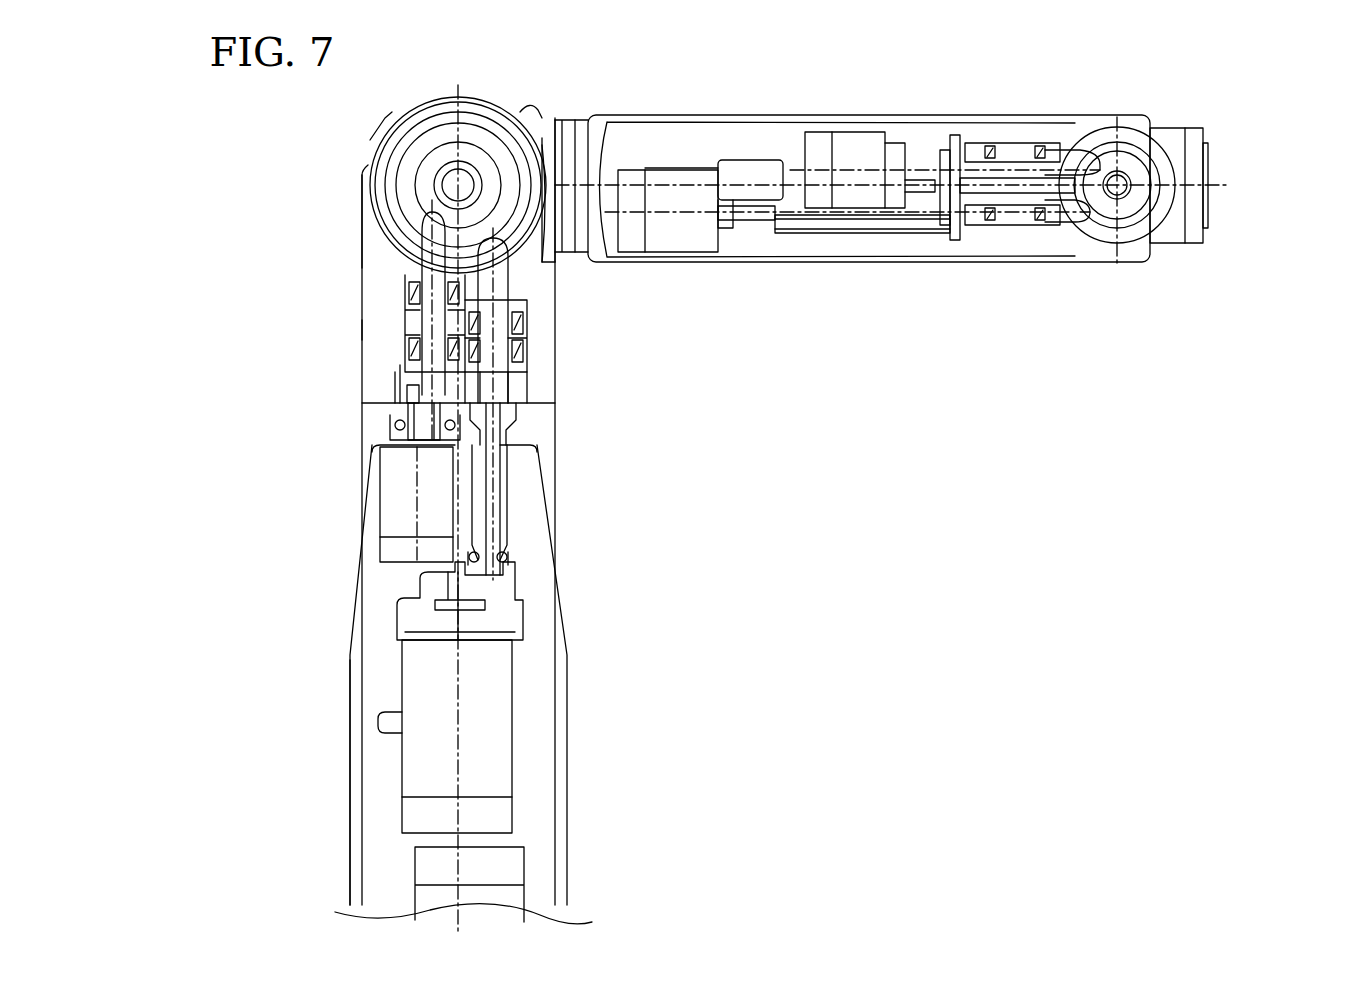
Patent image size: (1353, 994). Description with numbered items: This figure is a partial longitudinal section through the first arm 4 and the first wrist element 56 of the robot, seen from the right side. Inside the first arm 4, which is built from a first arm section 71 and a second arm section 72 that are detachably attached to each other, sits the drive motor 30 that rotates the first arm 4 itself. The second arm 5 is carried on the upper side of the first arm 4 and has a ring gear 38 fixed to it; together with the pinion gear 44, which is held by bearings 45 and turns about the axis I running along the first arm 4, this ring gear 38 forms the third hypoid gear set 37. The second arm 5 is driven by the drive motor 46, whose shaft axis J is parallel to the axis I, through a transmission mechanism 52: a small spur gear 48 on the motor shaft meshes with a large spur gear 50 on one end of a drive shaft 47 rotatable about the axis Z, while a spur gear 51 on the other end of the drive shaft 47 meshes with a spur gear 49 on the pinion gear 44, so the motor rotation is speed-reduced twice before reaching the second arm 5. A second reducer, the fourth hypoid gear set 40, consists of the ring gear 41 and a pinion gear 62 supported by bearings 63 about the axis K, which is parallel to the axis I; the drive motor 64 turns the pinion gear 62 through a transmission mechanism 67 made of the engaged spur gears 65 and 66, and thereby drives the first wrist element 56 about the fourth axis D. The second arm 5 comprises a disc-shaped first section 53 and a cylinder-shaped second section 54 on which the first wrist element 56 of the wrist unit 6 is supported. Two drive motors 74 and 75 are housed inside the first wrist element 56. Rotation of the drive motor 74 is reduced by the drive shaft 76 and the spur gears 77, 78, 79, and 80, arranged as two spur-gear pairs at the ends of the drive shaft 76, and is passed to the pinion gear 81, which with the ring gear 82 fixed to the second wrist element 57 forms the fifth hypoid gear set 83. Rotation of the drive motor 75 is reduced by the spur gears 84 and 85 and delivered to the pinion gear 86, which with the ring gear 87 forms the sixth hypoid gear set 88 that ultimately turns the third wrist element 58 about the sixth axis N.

The first arm 4 is at (569, 835).
The second arm 5 is at (556, 116).
The wrist unit 6 is at (1211, 130).
The drive motor 30 is at (525, 896).
The third hypoid gear set 37 is at (534, 251).
The ring gear 38 is at (475, 108).
The fourth hypoid gear set 40 is at (403, 211).
The ring gear 41 is at (425, 150).
The pinion gear 44 is at (514, 262).
The bearings 45 is at (527, 320).
The drive motor 46 is at (514, 712).
The drive shaft 47 is at (501, 515).
The spur gear 48 is at (430, 592).
The spur gear 49 is at (530, 377).
The spur gear 50 is at (509, 566).
The spur gear 51 is at (517, 406).
The transmission mechanism 52 is at (512, 493).
The first section 53 is at (530, 105).
The second section 54 is at (583, 116).
The first wrist element 56 is at (896, 115).
The second wrist element 57 is at (1155, 262).
The third wrist element 58 is at (1212, 180).
The pinion gear 62 is at (421, 232).
The bearings 63 is at (405, 292).
The drive motor 64 is at (372, 490).
The spur gear 65 is at (392, 400).
The spur gear 66 is at (405, 382).
The transmission mechanism 67 is at (402, 408).
The first arm section 71 is at (360, 322).
The second arm section 72 is at (349, 695).
The drive motor 74 is at (700, 252).
The drive motor 75 is at (838, 131).
The drive shaft 76 is at (830, 234).
The spur gear 77 is at (773, 186).
The spur gear 78 is at (765, 229).
The spur gear 79 is at (953, 241).
The spur gear 80 is at (991, 227).
The pinion gear 81 is at (1063, 223).
The ring gear 82 is at (1098, 233).
The fifth hypoid gear set 83 is at (1084, 227).
The spur gear 84 is at (936, 220).
The spur gear 85 is at (1058, 150).
The pinion gear 86 is at (1092, 142).
The ring gear 87 is at (1118, 128).
The sixth hypoid gear set 88 is at (1104, 170).
The fourth axis D is at (680, 183).
The axis K is at (415, 266).
The axis I is at (527, 348).
The axis Z is at (510, 455).
The axis J is at (458, 763).
The sixth axis N is at (1212, 195).